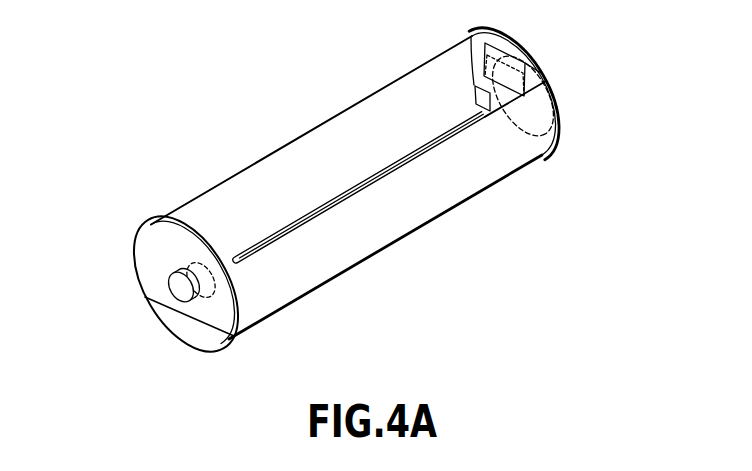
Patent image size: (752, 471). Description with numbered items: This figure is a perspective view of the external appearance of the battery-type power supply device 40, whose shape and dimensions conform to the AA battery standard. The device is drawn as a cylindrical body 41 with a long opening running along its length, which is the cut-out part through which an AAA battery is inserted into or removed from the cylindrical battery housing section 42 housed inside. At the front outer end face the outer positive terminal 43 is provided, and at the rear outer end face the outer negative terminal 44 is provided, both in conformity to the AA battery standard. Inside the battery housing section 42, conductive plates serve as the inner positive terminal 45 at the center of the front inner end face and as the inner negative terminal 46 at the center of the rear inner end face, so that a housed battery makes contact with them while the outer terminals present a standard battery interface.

The battery-type power supply device 40 is at (346, 189).
The cylindrical body 41 is at (414, 232).
The battery housing section 42 is at (357, 129).
The outer positive terminal 43 is at (186, 304).
The outer negative terminal 44 is at (557, 92).
The inner positive terminal 45 is at (210, 298).
The inner negative terminal 46 is at (499, 45).